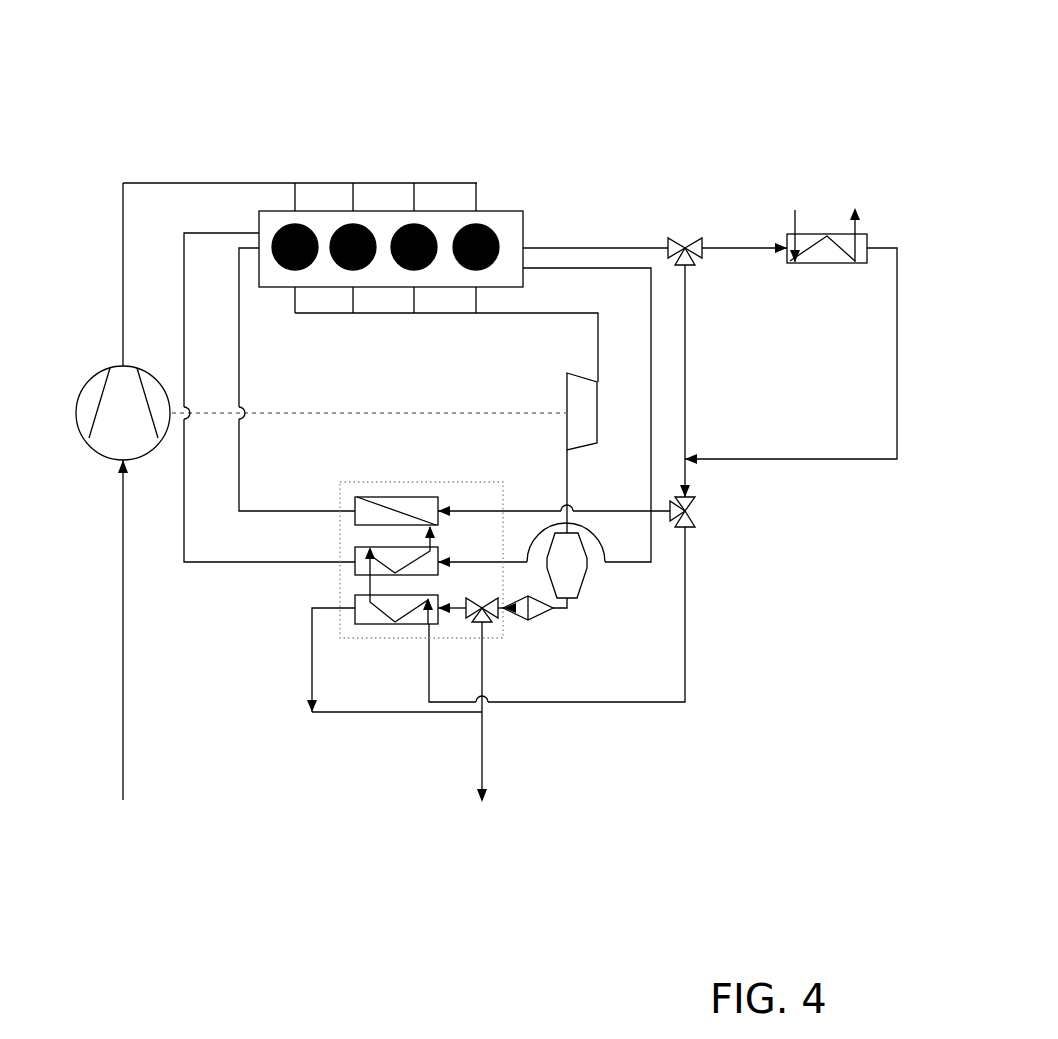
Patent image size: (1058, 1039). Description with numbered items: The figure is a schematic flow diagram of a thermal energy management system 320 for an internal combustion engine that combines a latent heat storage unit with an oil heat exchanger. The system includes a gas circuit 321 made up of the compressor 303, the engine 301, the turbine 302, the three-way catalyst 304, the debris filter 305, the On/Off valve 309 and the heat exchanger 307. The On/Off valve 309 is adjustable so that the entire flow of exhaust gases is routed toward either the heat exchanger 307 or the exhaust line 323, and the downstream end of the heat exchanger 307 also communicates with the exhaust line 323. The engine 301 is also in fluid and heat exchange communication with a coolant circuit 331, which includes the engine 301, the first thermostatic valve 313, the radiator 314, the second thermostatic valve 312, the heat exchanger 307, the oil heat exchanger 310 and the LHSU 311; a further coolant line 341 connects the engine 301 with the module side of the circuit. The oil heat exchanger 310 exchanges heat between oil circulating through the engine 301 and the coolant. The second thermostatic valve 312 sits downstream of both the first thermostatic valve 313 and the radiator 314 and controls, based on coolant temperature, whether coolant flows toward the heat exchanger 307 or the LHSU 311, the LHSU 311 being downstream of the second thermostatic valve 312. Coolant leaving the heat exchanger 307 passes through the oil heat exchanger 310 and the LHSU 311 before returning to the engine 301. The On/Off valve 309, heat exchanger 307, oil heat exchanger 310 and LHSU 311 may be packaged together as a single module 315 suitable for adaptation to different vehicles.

The thermal energy management system 320 is at (519, 70).
The gas circuit 321 is at (277, 174).
The engine 301 is at (524, 222).
The turbine 302 is at (567, 410).
The compressor 303 is at (89, 386).
The coolant line 341 is at (185, 341).
The coolant circuit 331 is at (613, 236).
The first thermostatic valve 313 is at (689, 240).
The radiator 314 is at (817, 265).
The second thermostatic valve 312 is at (690, 515).
The module 315 is at (400, 482).
The LHSU 311 is at (438, 497).
The oil heat exchanger 310 is at (355, 558).
The heat exchanger 307 is at (375, 627).
The On/Off valve 309 is at (482, 598).
The debris filter 305 is at (540, 621).
The 3-way catalyst 304 is at (586, 580).
The exhaust line 323 is at (482, 779).